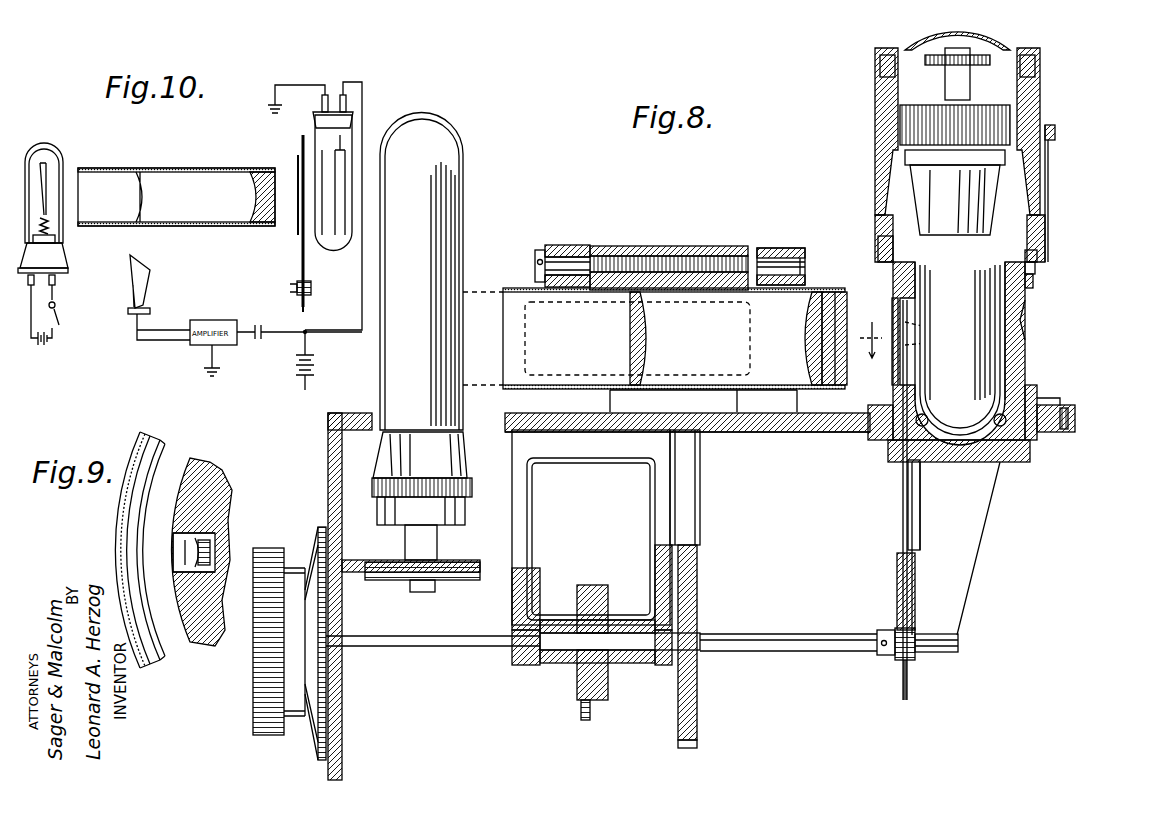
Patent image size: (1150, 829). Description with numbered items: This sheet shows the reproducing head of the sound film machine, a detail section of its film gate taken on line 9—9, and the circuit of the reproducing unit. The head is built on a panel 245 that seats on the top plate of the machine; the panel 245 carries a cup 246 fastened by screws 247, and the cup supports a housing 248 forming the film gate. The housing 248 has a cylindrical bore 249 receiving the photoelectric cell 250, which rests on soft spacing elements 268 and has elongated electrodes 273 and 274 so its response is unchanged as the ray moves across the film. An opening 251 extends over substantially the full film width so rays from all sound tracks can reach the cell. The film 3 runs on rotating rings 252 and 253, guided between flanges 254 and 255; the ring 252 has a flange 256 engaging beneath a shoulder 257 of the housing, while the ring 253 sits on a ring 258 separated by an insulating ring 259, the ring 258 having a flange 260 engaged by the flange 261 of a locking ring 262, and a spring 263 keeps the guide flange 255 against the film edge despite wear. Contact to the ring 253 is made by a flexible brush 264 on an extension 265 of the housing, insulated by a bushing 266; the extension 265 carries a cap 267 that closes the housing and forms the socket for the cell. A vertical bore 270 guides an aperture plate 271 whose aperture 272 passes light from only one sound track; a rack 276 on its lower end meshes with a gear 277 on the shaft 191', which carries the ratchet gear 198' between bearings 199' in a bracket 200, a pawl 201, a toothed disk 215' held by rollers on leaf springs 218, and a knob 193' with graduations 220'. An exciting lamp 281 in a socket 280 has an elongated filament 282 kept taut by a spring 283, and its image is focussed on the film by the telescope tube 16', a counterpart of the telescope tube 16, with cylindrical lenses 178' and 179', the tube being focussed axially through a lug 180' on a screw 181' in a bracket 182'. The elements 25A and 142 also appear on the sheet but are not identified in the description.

In FIG. 8, the film 3 is at (884, 369).
In FIG. 9, the film 3 is at (152, 445).
In FIG. 10, the film 3 is at (297, 220).
In FIG. 8, the section line 9— 9 is at (910, 340).
In FIG. 8, the telescope tube 16 is at (654, 304).
In FIG. 10, the telescope tube 16 is at (176, 180).
In FIG. 8, the telescope tube 16' is at (654, 304).
In FIG. 9, the record band 25A is at (122, 510).
In FIG. 8, the lens mount block 142 is at (836, 296).
In FIG. 8, the cylindrical lens 178' is at (702, 338).
In FIG. 8, the cylindrical lens 179' is at (729, 403).
In FIG. 8, the lug 180' is at (669, 251).
In FIG. 8, the screw 181' is at (784, 249).
In FIG. 8, the bracket 182' is at (562, 252).
In FIG. 8, the shaft 191' is at (642, 630).
In FIG. 8, the knob 193' is at (265, 643).
In FIG. 8, the ratchet gear 198' is at (585, 627).
In FIG. 8, the bearings 199' is at (580, 625).
In FIG. 8, the bracket 200 is at (655, 485).
In FIG. 8, the pawl 201 is at (580, 712).
In FIG. 8, the disk 215' is at (717, 646).
In FIG. 8, the leaf springs 218 is at (700, 497).
In FIG. 8, the graduations 220' is at (312, 596).
In FIG. 8, the panel 245 is at (770, 432).
In FIG. 8, the cup 246 is at (1020, 462).
In FIG. 8, the screws 247 is at (1062, 432).
In FIG. 8, the housing 248 is at (1037, 395).
In FIG. 9, the housing 248 is at (216, 628).
In FIG. 8, the cylindrical bore 249 is at (1002, 397).
In FIG. 8, the photoelectric cell 250 is at (995, 348).
In FIG. 10, the photoelectric cell 250 is at (300, 248).
In FIG. 8, the opening 251 is at (870, 440).
In FIG. 8, the rotating ring 252 is at (1060, 400).
In FIG. 9, the rotating ring 252 is at (140, 532).
In FIG. 8, the rotating ring 253 is at (1025, 298).
In FIG. 8, the flange 254 is at (1075, 412).
In FIG. 8, the film guide flange 255 is at (1033, 282).
In FIG. 8, the flange 256 is at (1030, 442).
In FIG. 8, the shoulder 257 is at (1012, 462).
In FIG. 8, the ring 258 is at (1020, 315).
In FIG. 8, the insulating ring 259 is at (1022, 325).
In FIG. 8, the flange 260 is at (1037, 258).
In FIG. 8, the flange 261 is at (1035, 270).
In FIG. 8, the locking ring 262 is at (1042, 230).
In FIG. 8, the spring 263 is at (878, 248).
In FIG. 8, the flexible brush 264 is at (1048, 172).
In FIG. 8, the extension 265 is at (1040, 118).
In FIG. 8, the bushing 266 is at (1055, 133).
In FIG. 8, the cap 267 is at (1035, 90).
In FIG. 8, the spacing elements 268 is at (926, 417).
In FIG. 8, the vertical bore 270 is at (905, 272).
In FIG. 9, the vertical bore 270 is at (207, 520).
In FIG. 8, the aperture plate 271 is at (903, 505).
In FIG. 9, the aperture plate 271 is at (205, 580).
In FIG. 10, the aperture plate 271 is at (302, 141).
In FIG. 8, the aperture 272 is at (908, 340).
In FIG. 9, the aperture 272 is at (197, 552).
In FIG. 10, the electrode 273 is at (335, 238).
In FIG. 10, the electrode 274 is at (312, 288).
In FIG. 8, the rack 276 is at (907, 683).
In FIG. 10, the rack 276 is at (302, 303).
In FIG. 8, the gear 277 is at (895, 632).
In FIG. 10, the gear 277 is at (291, 287).
In FIG. 8, the socket 280 is at (395, 566).
In FIG. 8, the exciting lamp 281 is at (460, 204).
In FIG. 10, the filament 282 is at (47, 180).
In FIG. 10, the spring 283 is at (48, 224).